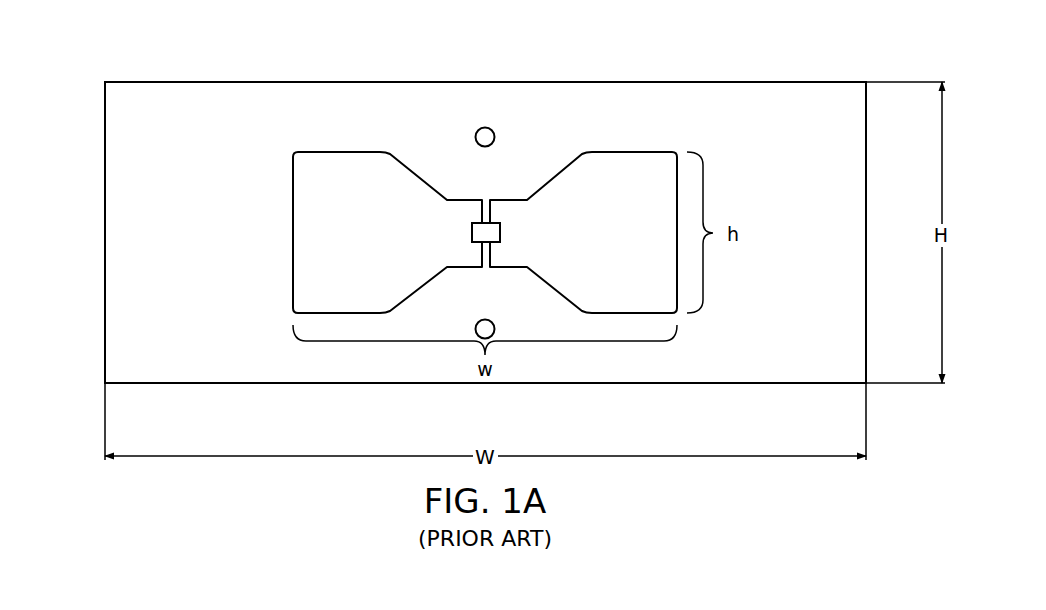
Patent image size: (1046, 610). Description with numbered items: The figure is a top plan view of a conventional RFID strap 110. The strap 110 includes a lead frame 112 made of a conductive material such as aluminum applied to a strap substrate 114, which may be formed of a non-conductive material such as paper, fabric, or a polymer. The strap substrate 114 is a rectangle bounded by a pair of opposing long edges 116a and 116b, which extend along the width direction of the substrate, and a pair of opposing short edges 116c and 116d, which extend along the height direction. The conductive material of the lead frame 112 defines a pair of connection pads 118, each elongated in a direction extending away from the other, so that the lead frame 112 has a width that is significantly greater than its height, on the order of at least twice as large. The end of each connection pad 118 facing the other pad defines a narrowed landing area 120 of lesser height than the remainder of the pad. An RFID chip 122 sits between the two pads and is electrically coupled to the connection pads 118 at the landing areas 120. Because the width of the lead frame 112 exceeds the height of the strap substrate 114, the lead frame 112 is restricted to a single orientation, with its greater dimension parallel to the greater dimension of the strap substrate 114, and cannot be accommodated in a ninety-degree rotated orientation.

The RFID strap 110 is at (874, 395).
The lead frame 112 is at (522, 228).
The strap substrate 114 is at (196, 100).
The long edge 116a is at (735, 82).
The long edge 116b is at (735, 384).
The short edge 116c is at (105, 234).
The short edge 116d is at (867, 235).
The connection pad 118 is at (355, 170).
The landing area 120 is at (470, 197).
The RFID chip 122 is at (472, 232).